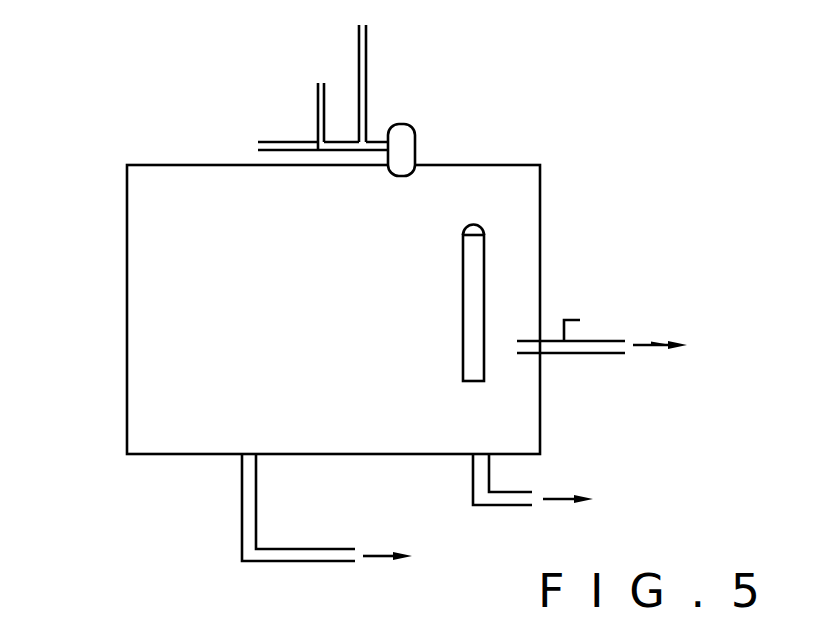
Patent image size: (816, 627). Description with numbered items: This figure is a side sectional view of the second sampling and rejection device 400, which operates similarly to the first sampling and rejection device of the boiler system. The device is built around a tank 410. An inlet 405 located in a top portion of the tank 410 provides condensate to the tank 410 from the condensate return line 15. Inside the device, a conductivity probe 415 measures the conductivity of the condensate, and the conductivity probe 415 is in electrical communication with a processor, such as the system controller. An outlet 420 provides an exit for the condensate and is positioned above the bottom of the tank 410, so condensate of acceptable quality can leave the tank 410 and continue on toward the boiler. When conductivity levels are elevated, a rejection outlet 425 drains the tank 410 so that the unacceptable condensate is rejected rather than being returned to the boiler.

The second sampling and rejection device 400 is at (84, 310).
The tank 410 is at (177, 428).
The condensate return line 15 is at (366, 96).
The inlet 405 is at (415, 163).
The outlet 420 is at (478, 224).
The conductivity probe 415 is at (572, 353).
The rejection outlet 425 is at (258, 458).